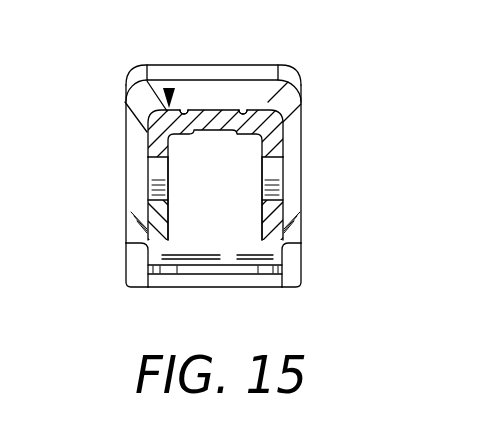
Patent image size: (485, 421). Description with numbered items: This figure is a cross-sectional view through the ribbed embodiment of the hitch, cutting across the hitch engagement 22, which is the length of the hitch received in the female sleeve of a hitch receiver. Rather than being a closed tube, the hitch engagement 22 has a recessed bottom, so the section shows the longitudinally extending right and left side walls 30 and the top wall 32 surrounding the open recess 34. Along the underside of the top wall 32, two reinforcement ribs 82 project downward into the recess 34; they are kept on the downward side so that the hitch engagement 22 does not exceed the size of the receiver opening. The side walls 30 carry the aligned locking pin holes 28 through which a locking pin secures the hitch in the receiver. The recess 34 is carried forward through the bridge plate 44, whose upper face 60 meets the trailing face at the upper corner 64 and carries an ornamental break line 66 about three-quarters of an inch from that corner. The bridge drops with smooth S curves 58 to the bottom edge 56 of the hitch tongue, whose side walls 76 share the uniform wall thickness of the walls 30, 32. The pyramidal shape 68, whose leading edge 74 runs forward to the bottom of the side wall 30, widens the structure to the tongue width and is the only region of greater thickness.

The hitch engagement 22 is at (164, 105).
The locking pin holes 28 is at (158, 143).
The side walls 30 is at (126, 133).
The top wall 32 is at (255, 118).
The recess 34 is at (219, 198).
The bridge plate 44 is at (225, 218).
The bottom edge 56 is at (169, 293).
The S curves 58 is at (138, 260).
The upper face 60 is at (245, 72).
The upper corner 64 is at (168, 88).
The break line 66 is at (251, 79).
The pyramidal shape 68 is at (158, 167).
The leading edge 74 is at (137, 228).
The side walls 76 is at (138, 282).
The ribs 82 is at (183, 108).